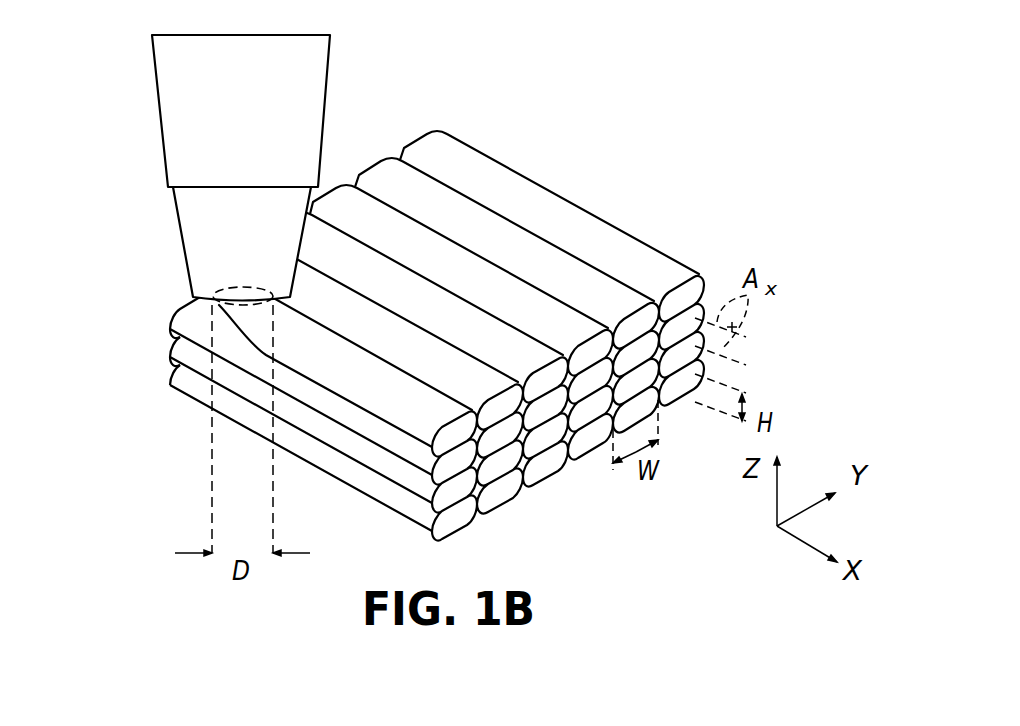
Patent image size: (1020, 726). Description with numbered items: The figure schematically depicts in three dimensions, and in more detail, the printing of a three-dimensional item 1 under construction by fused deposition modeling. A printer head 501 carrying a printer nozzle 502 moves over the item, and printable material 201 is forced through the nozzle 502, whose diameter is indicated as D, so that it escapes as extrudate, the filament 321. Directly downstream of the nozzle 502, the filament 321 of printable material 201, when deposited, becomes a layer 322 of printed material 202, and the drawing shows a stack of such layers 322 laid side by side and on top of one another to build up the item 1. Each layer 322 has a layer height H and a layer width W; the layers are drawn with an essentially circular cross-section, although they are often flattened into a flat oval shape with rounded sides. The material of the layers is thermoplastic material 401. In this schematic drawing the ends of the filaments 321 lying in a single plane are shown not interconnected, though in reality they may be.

The 3D item 1 is at (451, 323).
The 3D printable material 201 is at (354, 269).
The extrudate 321 is at (297, 332).
The layer 322 is at (723, 252).
The 3D printed material 202 is at (323, 368).
The thermoplastic material 401 is at (407, 455).
The printer head 501 is at (161, 126).
The printer nozzle 502 is at (190, 299).